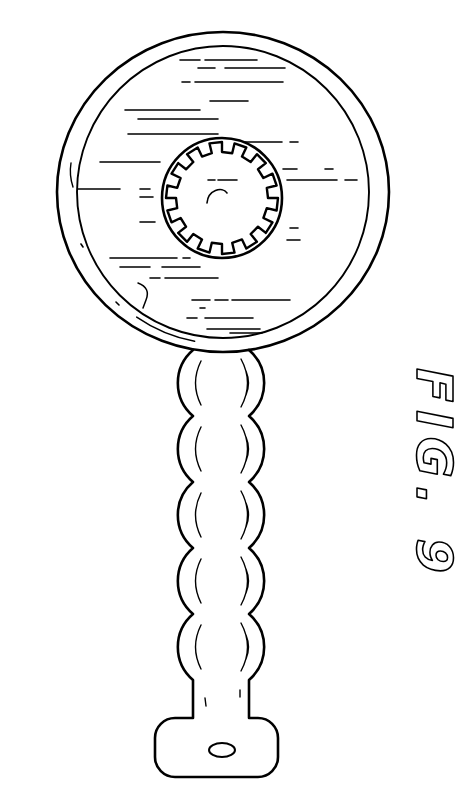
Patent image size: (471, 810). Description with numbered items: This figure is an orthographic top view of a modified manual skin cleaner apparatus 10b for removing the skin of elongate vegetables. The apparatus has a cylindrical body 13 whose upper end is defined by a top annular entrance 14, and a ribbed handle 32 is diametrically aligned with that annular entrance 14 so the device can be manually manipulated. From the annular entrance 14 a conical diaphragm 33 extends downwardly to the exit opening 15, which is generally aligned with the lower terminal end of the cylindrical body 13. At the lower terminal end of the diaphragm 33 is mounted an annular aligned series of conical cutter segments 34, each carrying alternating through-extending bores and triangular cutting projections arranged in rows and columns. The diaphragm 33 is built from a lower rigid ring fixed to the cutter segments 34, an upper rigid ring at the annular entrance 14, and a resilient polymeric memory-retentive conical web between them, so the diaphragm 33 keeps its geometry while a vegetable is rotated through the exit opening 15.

The modified manual skin cleaner apparatus 10b is at (202, 404).
The cylindrical body 13 is at (62, 147).
The top annular entrance 14 is at (96, 289).
The exit opening 15 is at (227, 193).
The ribbed handle 32 is at (264, 522).
The conical diaphragm 33 is at (128, 327).
The conical cutter segments 34 is at (162, 198).